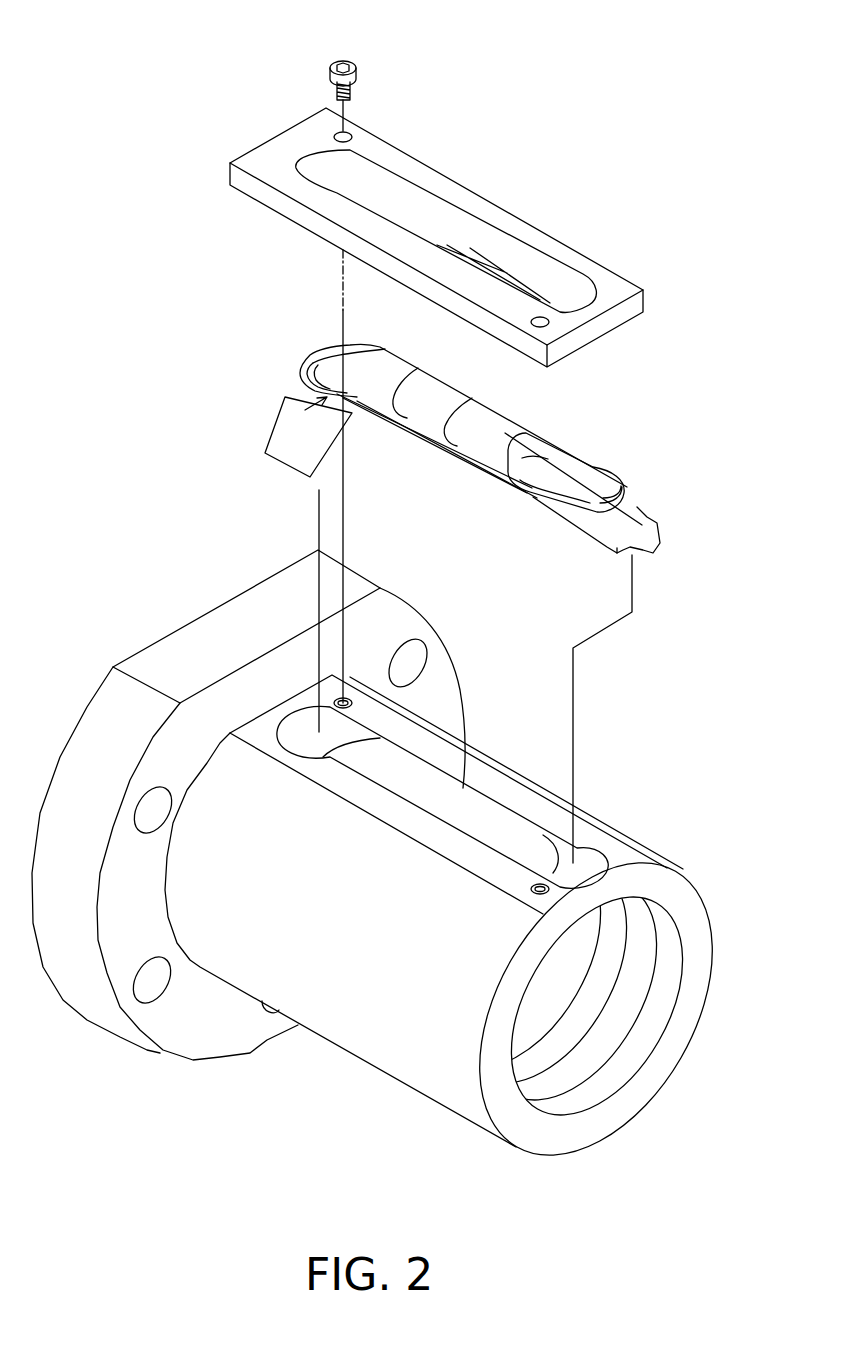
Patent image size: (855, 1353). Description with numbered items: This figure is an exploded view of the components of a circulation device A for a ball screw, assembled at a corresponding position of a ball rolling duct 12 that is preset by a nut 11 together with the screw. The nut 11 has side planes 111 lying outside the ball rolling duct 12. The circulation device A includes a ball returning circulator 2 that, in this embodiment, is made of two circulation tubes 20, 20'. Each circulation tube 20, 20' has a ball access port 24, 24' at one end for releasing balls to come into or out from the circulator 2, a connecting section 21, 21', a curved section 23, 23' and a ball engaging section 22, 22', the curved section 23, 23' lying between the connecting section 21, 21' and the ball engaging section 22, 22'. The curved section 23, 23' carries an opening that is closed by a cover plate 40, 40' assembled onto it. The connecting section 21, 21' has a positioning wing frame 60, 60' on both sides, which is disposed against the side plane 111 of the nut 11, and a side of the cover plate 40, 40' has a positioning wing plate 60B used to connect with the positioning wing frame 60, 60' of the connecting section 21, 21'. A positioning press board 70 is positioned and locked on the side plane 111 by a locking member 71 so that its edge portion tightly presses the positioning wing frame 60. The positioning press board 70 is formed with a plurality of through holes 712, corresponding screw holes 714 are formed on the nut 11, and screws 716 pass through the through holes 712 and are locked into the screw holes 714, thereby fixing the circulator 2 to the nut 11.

The ball returning circulator 2 is at (508, 394).
The nut 11 is at (377, 1003).
The side plane 111 is at (607, 840).
The ball rolling duct 12 is at (458, 807).
The screw holes 714 is at (351, 701).
The positioning press board 70 is at (562, 252).
The locking member 71 is at (391, 66).
The through holes 712 is at (336, 134).
The screws 716 is at (332, 70).
The circulation device A is at (176, 133).
The circulation tube 20 is at (412, 376).
The connecting section 21 is at (435, 376).
The ball engaging section 22 is at (297, 404).
The curved section 23 is at (336, 358).
The ball access port 24 is at (281, 412).
The cover plate 40 is at (435, 430).
The cover plate 40' is at (447, 478).
The positioning wing frame 60 is at (426, 451).
The positioning wing frame 60' is at (529, 479).
The positioning wing plate 60B is at (310, 476).
The circulation tube 20' is at (644, 476).
The connecting section 21' is at (621, 455).
The curved section 23' is at (668, 471).
The ball engaging section 22' is at (635, 511).
The ball access port 24' is at (677, 525).